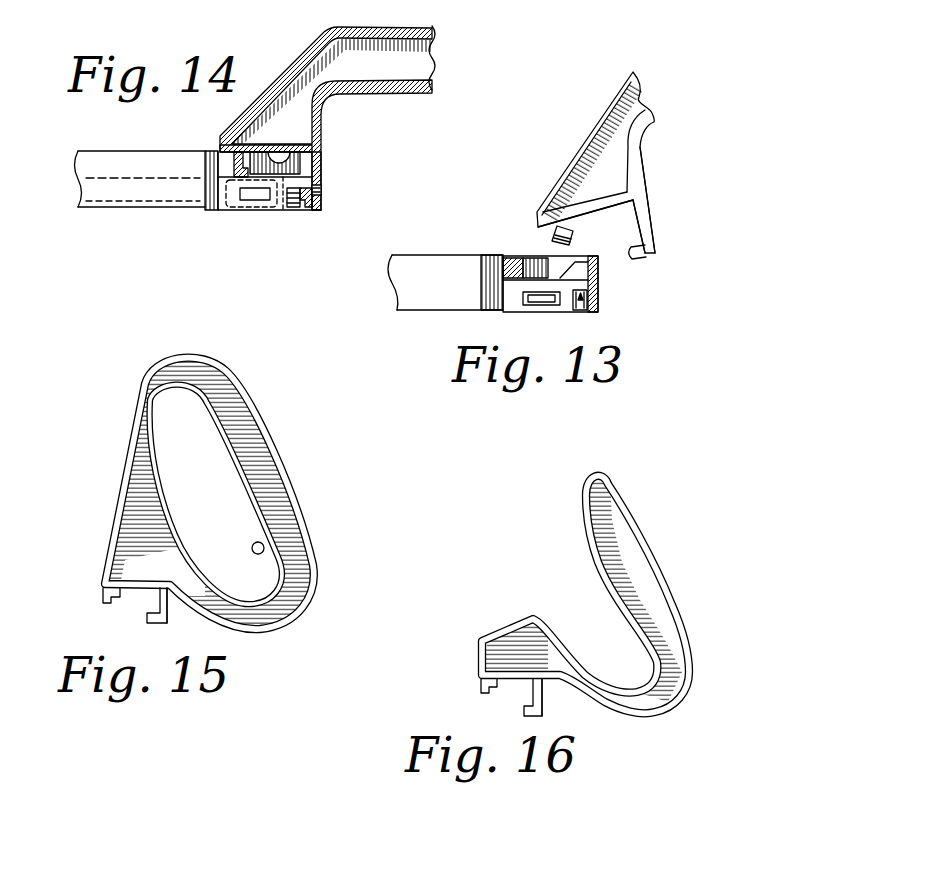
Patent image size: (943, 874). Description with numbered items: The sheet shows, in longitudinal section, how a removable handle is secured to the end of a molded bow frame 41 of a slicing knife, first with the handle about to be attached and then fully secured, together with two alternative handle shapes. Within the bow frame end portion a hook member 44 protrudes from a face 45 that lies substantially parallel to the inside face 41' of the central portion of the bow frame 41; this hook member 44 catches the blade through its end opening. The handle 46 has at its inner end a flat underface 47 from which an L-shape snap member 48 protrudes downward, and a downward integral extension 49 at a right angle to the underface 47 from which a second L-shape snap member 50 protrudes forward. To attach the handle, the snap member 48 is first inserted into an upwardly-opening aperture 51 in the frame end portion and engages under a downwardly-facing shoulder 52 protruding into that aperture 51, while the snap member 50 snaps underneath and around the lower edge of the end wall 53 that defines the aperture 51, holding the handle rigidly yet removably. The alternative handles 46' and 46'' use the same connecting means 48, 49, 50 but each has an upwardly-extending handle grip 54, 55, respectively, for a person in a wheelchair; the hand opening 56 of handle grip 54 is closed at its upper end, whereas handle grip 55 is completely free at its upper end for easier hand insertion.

In FIG. 14, the bow frame 41 is at (122, 160).
In FIG. 14, the inside face of central portion of the bow frame 41' is at (190, 159).
In FIG. 14, the hook member 44 is at (255, 198).
In FIG. 13, the hook member 44 is at (527, 297).
In FIG. 14, the face 45 is at (280, 199).
In FIG. 14, the handle 46 is at (355, 118).
In FIG. 13, the handle 46 is at (620, 162).
In FIG. 15, the handle 46' is at (223, 494).
In FIG. 16, the handle 46'' is at (588, 594).
In FIG. 14, the flat underface 47 is at (314, 150).
In FIG. 13, the flat underface 47 is at (628, 207).
In FIG. 14, the L-shape snap member 48 is at (243, 165).
In FIG. 13, the L-shape snap member 48 is at (527, 268).
In FIG. 15, the L-shape snap member 48 is at (103, 598).
In FIG. 16, the L-shape snap member 48 is at (481, 693).
In FIG. 14, the downward integral extension 49 is at (318, 167).
In FIG. 13, the downward integral extension 49 is at (652, 224).
In FIG. 15, the downward integral extension 49 is at (167, 606).
In FIG. 16, the downward integral extension 49 is at (545, 703).
In FIG. 14, the L-shape snap member 50 is at (305, 207).
In FIG. 13, the L-shape snap member 50 is at (648, 250).
In FIG. 15, the L-shape snap member 50 is at (147, 620).
In FIG. 16, the L-shape snap member 50 is at (528, 704).
In FIG. 14, the upwardly-opening aperture 51 is at (317, 167).
In FIG. 13, the upwardly-opening aperture 51 is at (577, 262).
In FIG. 14, the downwardly-facing shoulder 52 is at (217, 160).
In FIG. 13, the downwardly-facing shoulder 52 is at (520, 262).
In FIG. 14, the end wall 53 is at (315, 190).
In FIG. 13, the end wall 53 is at (595, 290).
In FIG. 15, the handle grip 54 is at (282, 512).
In FIG. 16, the handle grip 55 is at (645, 592).
In FIG. 15, the hand opening 56 is at (264, 550).